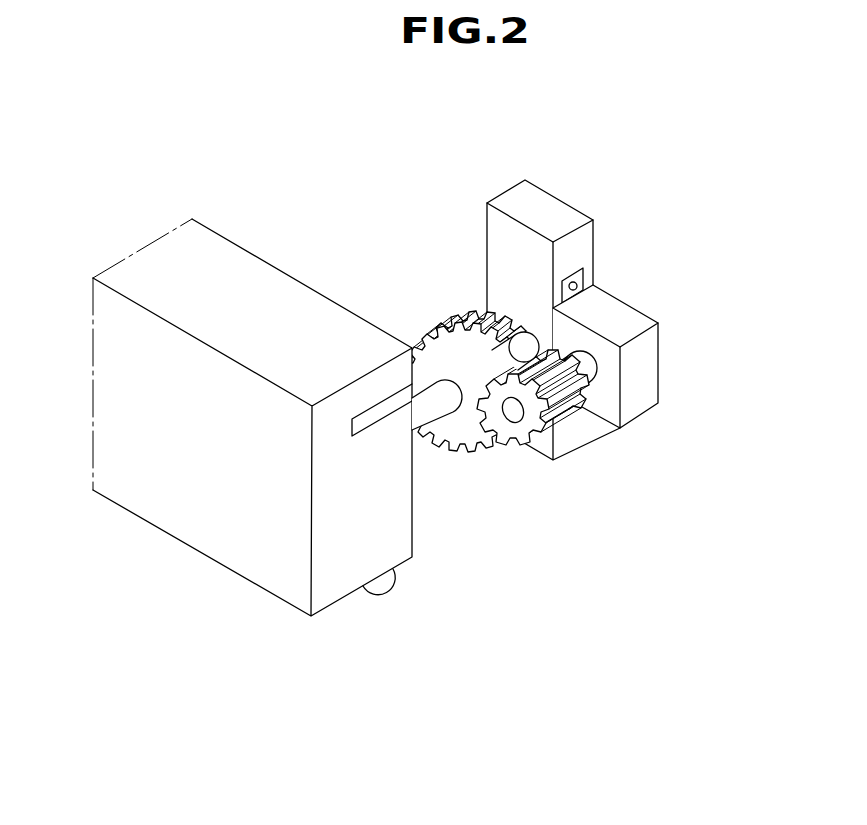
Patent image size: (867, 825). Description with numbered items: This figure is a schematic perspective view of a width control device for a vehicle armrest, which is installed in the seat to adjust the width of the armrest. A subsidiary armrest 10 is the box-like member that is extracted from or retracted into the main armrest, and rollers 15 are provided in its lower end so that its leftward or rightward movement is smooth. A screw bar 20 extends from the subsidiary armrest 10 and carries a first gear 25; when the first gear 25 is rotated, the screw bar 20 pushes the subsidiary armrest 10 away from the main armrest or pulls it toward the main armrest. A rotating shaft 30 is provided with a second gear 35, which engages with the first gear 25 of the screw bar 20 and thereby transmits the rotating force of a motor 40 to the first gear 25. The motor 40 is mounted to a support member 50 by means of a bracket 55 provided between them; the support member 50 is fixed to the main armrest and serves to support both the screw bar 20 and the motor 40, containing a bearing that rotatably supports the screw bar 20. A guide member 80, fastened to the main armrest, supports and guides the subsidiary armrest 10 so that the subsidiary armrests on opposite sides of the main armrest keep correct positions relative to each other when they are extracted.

The subsidiary armrest 10 is at (165, 475).
The rollers 15 is at (382, 588).
The screw bar 20 is at (437, 400).
The first gear 25 is at (469, 322).
The rotating shaft 30 is at (580, 377).
The second gear 35 is at (588, 410).
The motor 40 is at (643, 372).
The support member 50 is at (547, 205).
The bracket 55 is at (583, 287).
The guide member 80 is at (377, 414).